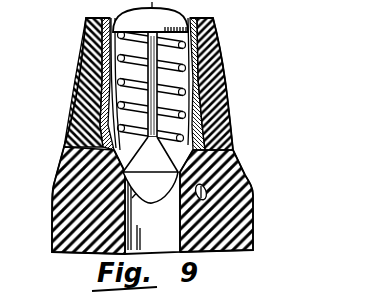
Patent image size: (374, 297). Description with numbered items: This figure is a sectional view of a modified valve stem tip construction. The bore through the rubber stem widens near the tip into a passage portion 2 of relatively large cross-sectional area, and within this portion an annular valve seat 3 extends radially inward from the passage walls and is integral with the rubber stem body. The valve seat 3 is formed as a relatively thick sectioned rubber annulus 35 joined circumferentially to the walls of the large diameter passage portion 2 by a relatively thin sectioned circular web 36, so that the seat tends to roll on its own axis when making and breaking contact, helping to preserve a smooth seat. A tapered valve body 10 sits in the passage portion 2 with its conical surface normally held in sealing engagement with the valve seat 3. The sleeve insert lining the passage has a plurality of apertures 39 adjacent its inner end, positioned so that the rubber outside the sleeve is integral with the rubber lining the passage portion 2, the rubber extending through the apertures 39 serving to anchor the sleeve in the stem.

The passage portion of relatively large cross-sectional area 2 is at (152, 200).
The annular valve seat 3 is at (136, 162).
The tapered valve body 10 is at (90, 175).
The rubber annulus 35 is at (118, 144).
The circular web 36 is at (236, 152).
The apertures 39 is at (214, 207).